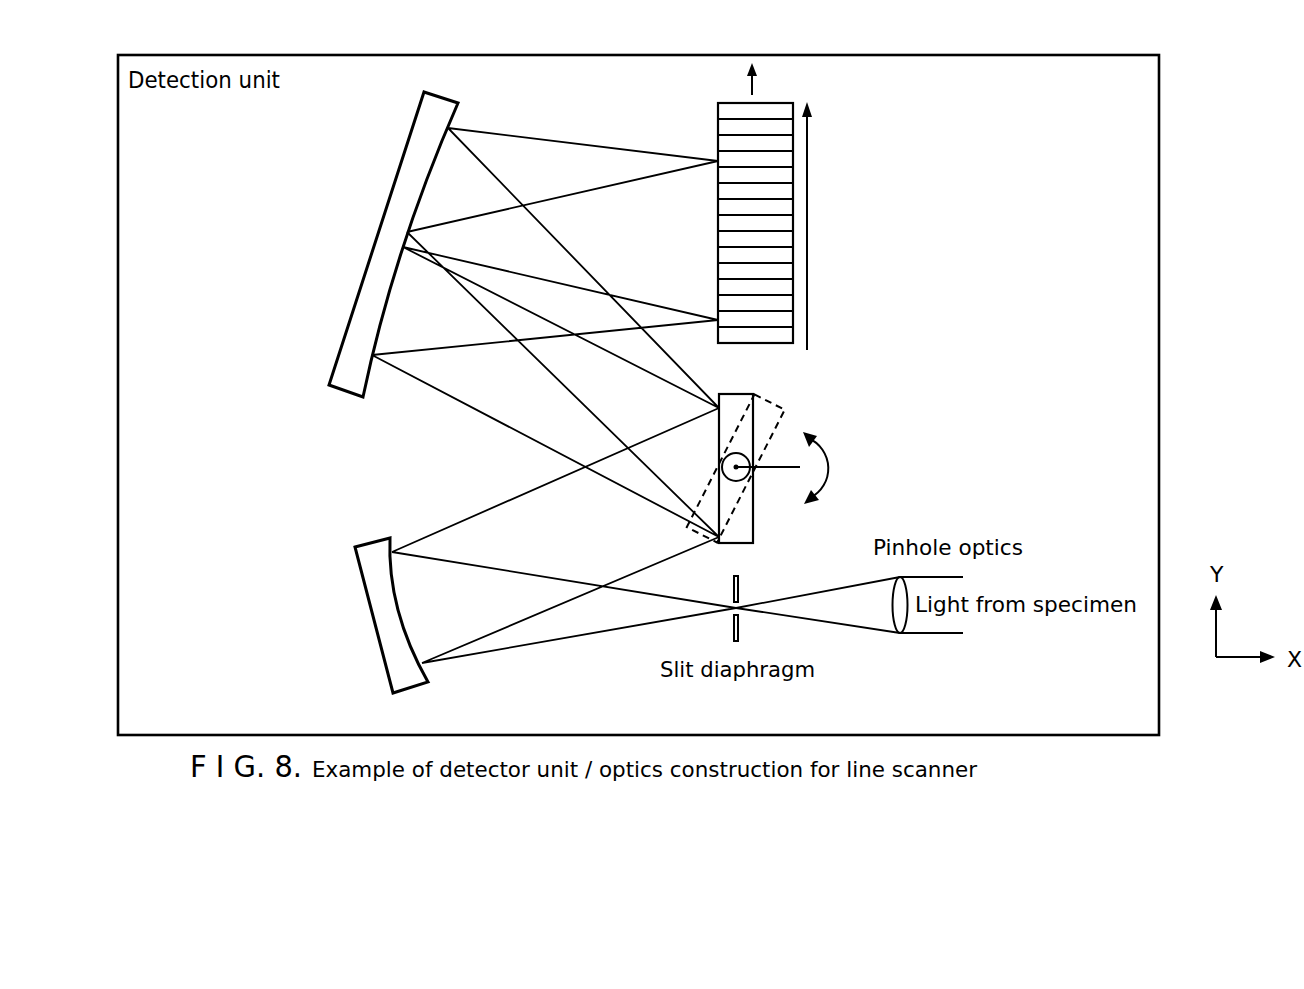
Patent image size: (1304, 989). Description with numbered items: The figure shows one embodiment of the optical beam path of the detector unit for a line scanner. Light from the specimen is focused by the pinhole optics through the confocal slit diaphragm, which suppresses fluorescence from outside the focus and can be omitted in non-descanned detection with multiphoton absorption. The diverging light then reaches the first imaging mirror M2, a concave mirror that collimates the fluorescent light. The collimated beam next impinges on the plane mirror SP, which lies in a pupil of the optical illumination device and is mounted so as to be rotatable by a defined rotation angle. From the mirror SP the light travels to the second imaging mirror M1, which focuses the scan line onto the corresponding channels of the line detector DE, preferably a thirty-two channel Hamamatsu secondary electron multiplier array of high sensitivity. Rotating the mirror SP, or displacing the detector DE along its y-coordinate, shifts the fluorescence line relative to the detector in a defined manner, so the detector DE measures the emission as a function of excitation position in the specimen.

The second imaging mirror M1 is at (387, 244).
The first imaging mirror M2 is at (380, 615).
The plane mirror SP is at (819, 472).
The line detector DE is at (876, 206).